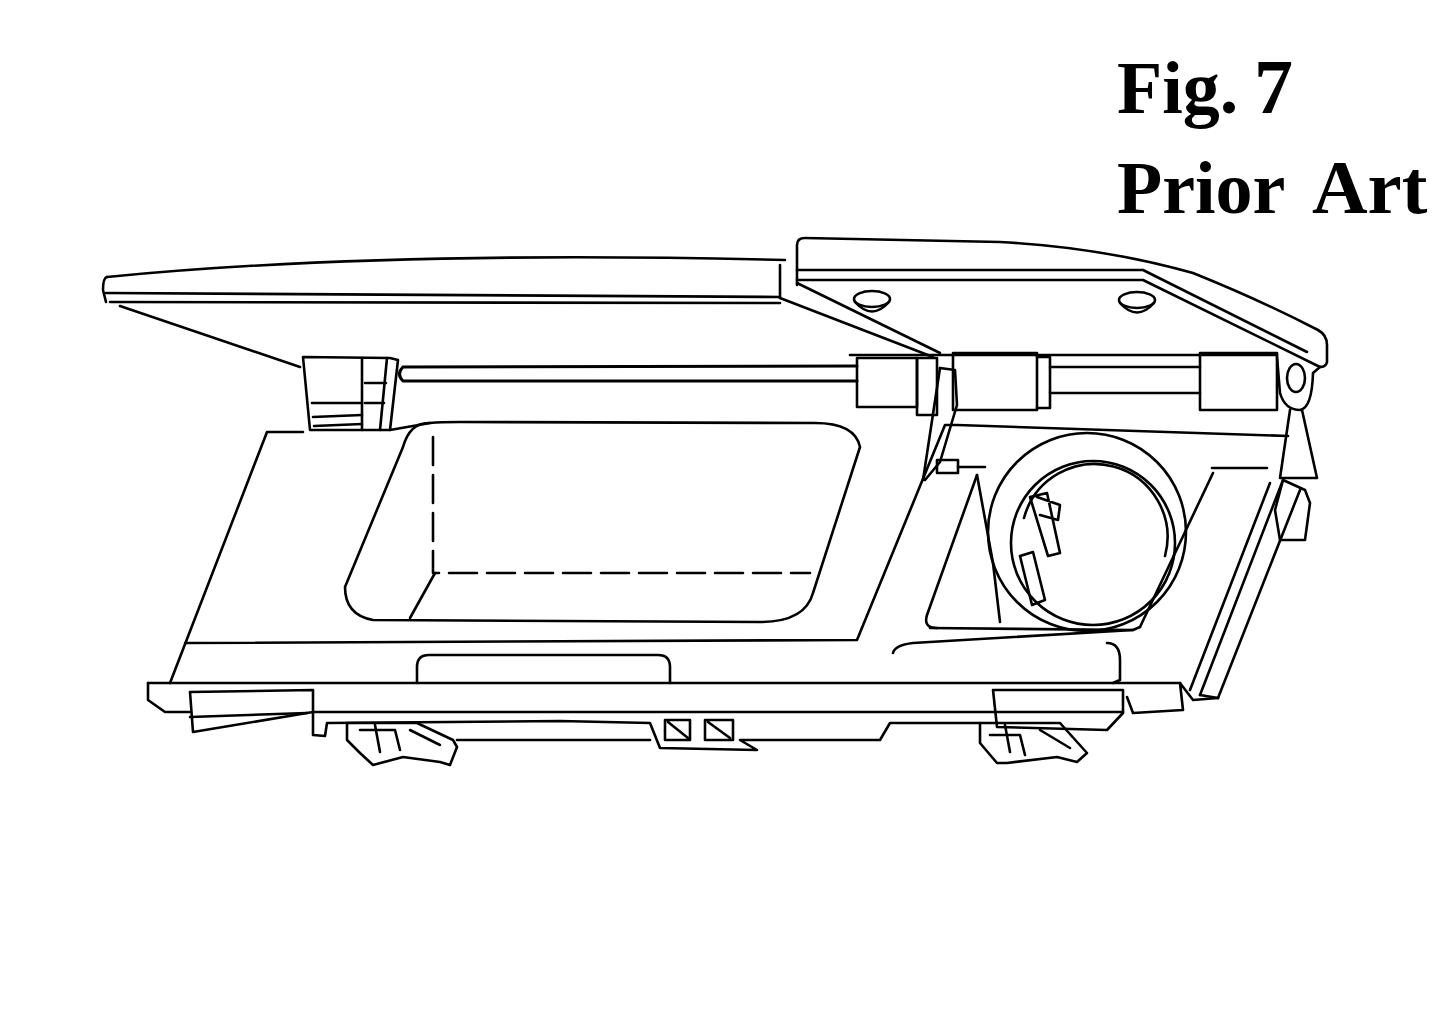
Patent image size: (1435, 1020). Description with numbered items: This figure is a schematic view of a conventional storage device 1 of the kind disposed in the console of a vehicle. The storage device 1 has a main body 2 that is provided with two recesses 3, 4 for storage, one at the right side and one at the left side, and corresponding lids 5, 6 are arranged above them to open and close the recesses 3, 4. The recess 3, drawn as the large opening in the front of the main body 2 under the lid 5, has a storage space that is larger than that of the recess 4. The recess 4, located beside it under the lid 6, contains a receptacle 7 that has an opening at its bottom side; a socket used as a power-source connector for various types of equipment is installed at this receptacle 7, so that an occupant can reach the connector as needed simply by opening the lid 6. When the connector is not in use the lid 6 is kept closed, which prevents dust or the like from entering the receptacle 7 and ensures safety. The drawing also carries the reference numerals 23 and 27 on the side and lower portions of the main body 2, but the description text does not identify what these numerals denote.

The storage device 1 is at (535, 185).
The main body 2 is at (212, 527).
The recess 3 is at (653, 530).
The recess 4 is at (946, 604).
The lid 5 is at (304, 270).
The lid 6 is at (928, 250).
The receptacle 7 is at (1163, 473).
The side wall 23 is at (1223, 647).
The fastening clips 27 is at (407, 757).